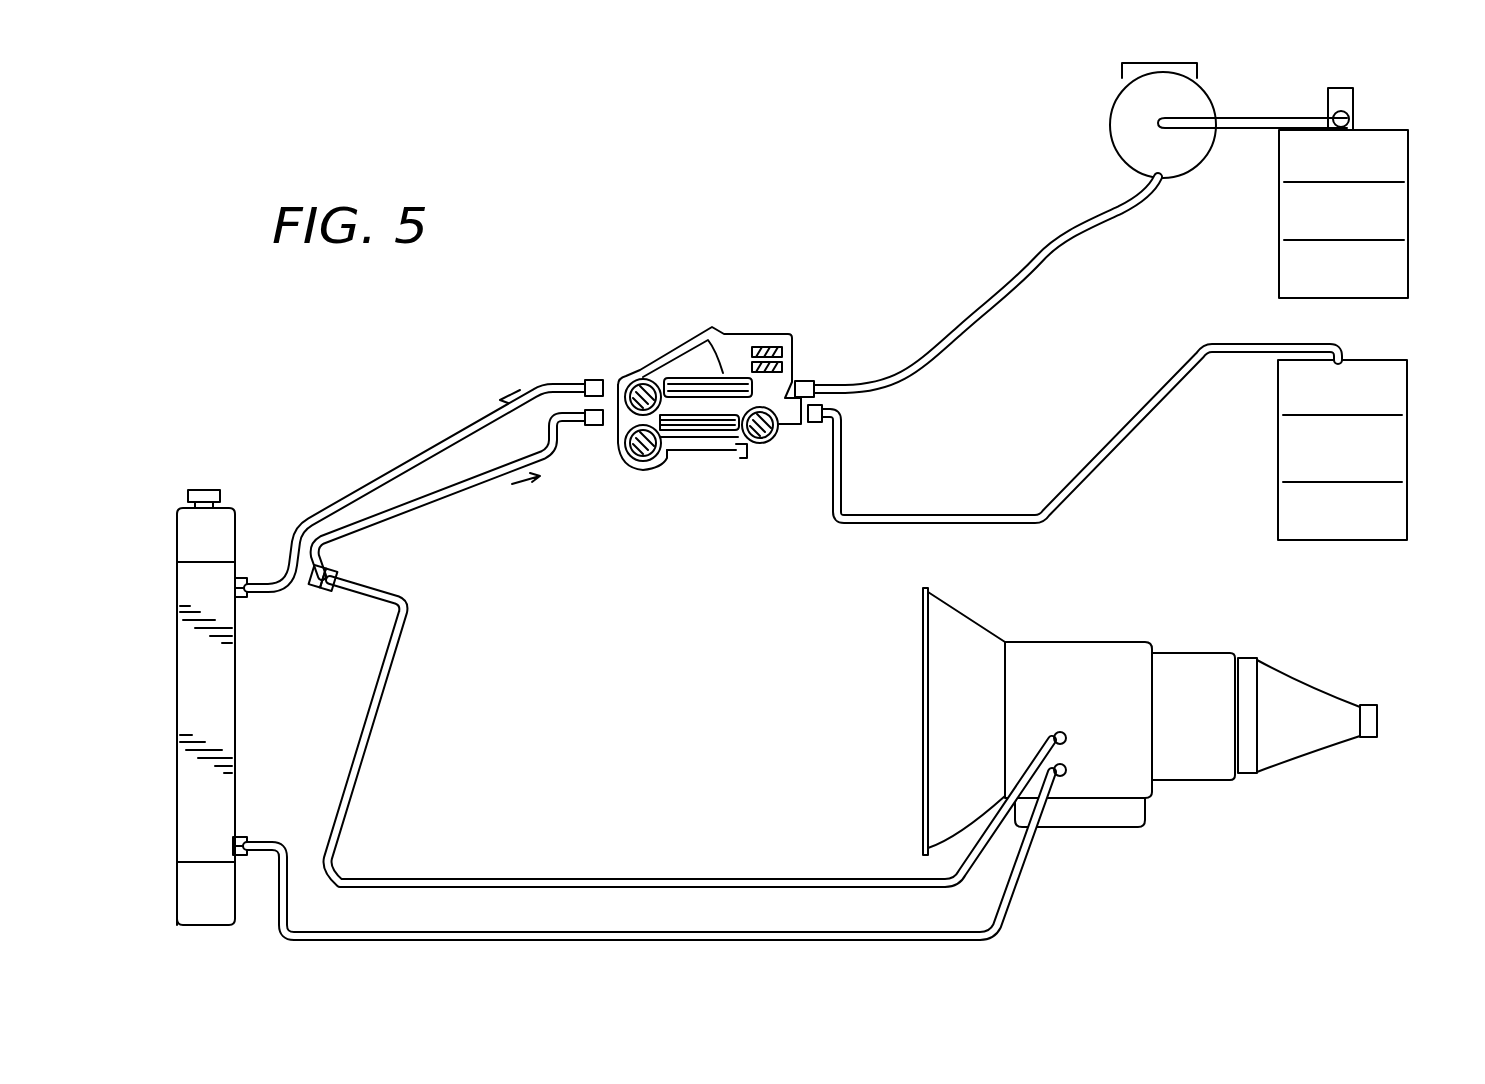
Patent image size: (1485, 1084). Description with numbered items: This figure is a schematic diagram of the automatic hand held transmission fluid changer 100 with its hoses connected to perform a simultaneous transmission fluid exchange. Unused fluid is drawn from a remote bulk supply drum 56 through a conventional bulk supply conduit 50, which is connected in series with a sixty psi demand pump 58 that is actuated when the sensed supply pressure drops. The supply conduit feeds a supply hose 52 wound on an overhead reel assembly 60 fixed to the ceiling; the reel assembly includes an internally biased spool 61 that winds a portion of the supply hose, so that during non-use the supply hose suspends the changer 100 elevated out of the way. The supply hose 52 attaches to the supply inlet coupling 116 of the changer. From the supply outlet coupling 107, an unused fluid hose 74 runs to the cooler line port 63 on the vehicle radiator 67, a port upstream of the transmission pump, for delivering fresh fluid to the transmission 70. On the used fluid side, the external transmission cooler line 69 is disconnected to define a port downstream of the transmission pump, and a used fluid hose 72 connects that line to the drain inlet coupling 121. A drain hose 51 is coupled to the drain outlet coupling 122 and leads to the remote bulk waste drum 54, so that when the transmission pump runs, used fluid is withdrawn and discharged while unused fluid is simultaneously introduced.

The bulk supply conduit 50 is at (1256, 116).
The drain hose 51 is at (980, 514).
The supply hose 52 is at (985, 302).
The bulk waste drum 54 is at (1409, 436).
The bulk supply drum 56 is at (1410, 205).
The demand pump 58 is at (1355, 116).
The overhead reel assembly 60 is at (1127, 117).
The spool 61 is at (1109, 133).
The cooler line port 63 is at (243, 578).
The vehicle radiator 67 is at (198, 707).
The transmission cooler line 69 is at (390, 700).
The transmission 70 is at (1115, 641).
The used fluid hose 72 is at (452, 497).
The unused fluid hose 74 is at (415, 460).
The automatic hand held transmission fluid changer 100 is at (713, 367).
The supply outlet coupling 107 is at (593, 379).
The supply inlet coupling 116 is at (808, 380).
The drain inlet coupling 121 is at (597, 427).
The drain outlet coupling 122 is at (816, 425).